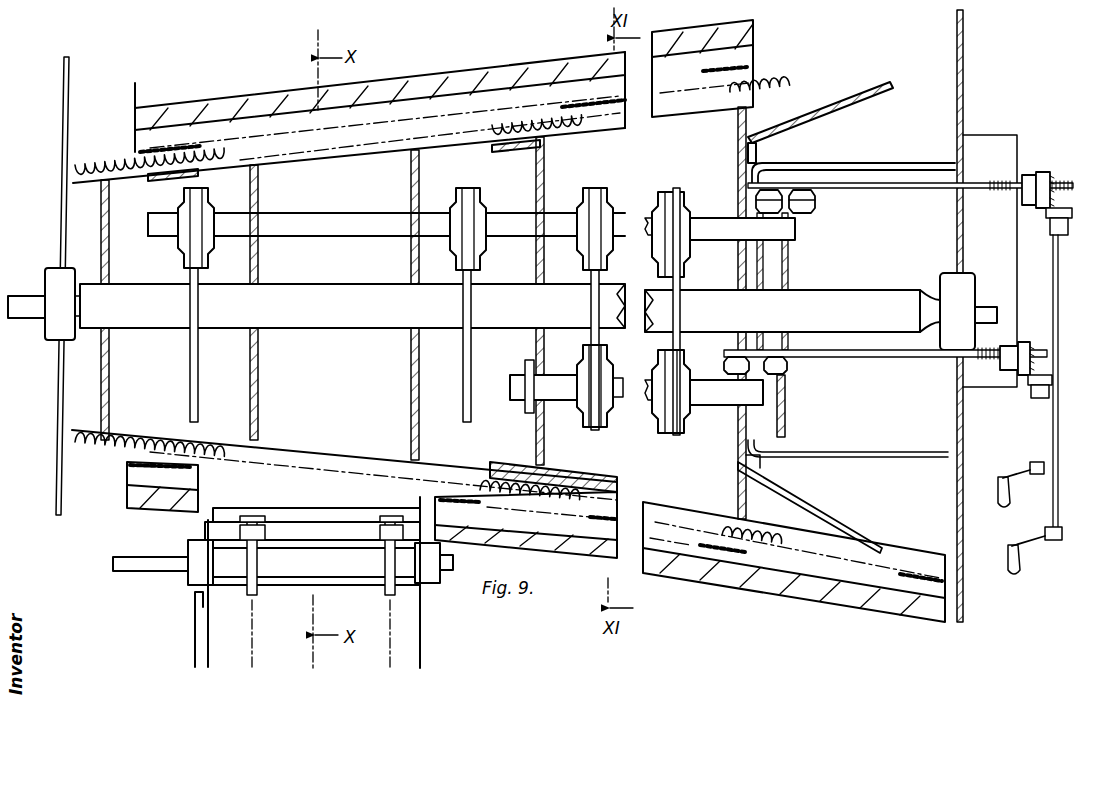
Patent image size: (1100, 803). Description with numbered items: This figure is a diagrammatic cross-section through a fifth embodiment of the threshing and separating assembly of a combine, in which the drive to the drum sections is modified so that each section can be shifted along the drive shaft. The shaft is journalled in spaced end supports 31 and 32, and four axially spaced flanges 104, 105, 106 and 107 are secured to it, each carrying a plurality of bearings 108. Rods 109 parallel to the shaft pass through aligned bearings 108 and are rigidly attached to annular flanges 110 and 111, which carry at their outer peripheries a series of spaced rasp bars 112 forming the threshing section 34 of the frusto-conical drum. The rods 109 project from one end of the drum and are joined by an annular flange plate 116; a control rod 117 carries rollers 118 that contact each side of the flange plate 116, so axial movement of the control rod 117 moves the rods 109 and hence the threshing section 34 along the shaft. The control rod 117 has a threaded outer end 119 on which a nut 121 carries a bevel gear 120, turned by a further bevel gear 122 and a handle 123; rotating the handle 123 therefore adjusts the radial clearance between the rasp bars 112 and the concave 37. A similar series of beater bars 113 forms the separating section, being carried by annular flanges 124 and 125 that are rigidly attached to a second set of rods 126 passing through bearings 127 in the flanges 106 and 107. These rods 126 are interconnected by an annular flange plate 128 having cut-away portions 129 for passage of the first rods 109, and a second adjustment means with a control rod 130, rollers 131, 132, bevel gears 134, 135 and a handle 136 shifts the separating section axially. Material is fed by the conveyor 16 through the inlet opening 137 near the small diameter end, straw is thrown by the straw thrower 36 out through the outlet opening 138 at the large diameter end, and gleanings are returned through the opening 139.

The conveyor 16 is at (240, 609).
The end support 31 is at (64, 246).
The end support 32 is at (963, 93).
The threshing section 34 is at (207, 158).
The straw thrower 36 is at (822, 158).
The concave 37 is at (580, 100).
The flange 104 is at (190, 368).
The flange 105 is at (466, 367).
The flange 106 is at (591, 273).
The flange 107 is at (676, 292).
The bearing 108 is at (178, 252).
The rod 109 is at (294, 222).
The annular flange 110 is at (258, 188).
The annular flange 111 is at (411, 176).
The rasp bar 112 is at (228, 160).
The beater bar 113 is at (590, 478).
The annular flange plate 116 is at (795, 240).
The control rod 117 is at (870, 183).
The roller 118 is at (769, 196).
The threaded outer end 119 is at (1065, 197).
The bevel gear 120 is at (1046, 176).
The nut 121 is at (1028, 175).
The bevel gear 122 is at (1050, 218).
The handle 123 is at (1010, 556).
The annular flange 124 is at (533, 428).
The annular flange 125 is at (745, 428).
The rod 126 is at (566, 405).
The bearing 127 is at (673, 432).
The annular flange plate 128 is at (750, 408).
The cut-away portion 129 is at (764, 264).
The control rod 130 is at (788, 364).
The roller 131 is at (726, 366).
The roller 132 is at (786, 376).
The bevel gear 134 is at (1025, 344).
The bevel gear 135 is at (1030, 380).
The handle 136 is at (1000, 490).
The inlet opening 137 is at (288, 505).
The outlet opening 138 is at (930, 79).
The opening 139 is at (118, 132).